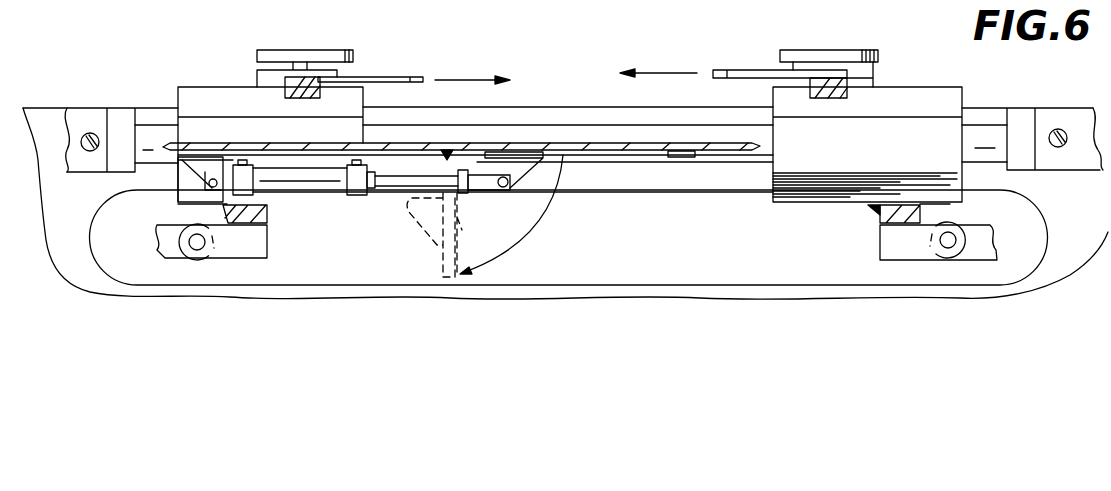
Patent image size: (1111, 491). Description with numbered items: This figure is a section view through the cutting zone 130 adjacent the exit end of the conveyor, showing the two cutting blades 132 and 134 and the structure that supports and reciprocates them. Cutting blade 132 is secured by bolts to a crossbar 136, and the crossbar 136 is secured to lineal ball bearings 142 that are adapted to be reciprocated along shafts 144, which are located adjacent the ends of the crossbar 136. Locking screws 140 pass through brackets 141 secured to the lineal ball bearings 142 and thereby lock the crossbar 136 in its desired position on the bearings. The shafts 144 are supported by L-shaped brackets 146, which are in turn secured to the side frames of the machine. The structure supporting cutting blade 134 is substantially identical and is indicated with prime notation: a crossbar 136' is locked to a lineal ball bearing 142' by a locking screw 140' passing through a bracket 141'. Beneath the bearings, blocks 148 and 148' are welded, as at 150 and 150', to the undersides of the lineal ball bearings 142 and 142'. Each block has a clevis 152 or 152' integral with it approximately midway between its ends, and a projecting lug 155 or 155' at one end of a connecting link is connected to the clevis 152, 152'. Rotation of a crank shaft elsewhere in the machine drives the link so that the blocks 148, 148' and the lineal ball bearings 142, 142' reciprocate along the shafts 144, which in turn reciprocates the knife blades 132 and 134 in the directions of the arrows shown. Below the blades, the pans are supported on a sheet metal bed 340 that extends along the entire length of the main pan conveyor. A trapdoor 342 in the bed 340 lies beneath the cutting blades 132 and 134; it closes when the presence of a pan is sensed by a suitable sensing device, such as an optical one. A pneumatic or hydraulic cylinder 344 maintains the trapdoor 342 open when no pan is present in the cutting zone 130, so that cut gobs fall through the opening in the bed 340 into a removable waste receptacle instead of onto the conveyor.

The cutting zone 130 is at (599, 60).
The cutting blade 132 is at (352, 72).
The cutting blade 134 is at (746, 69).
The crossbar 136 is at (277, 96).
The crossbar 136' is at (868, 97).
The locking screw 140 is at (332, 39).
The locking screw 140' is at (832, 31).
The bracket 141 is at (271, 57).
The bracket 141' is at (868, 55).
The lineal ball bearing 142 is at (256, 128).
The lineal ball bearing 142' is at (894, 134).
The shaft 144 is at (594, 128).
The L-shaped bracket 146 is at (87, 113).
The block 148 is at (274, 224).
The block 148' is at (861, 224).
The weld 150 is at (169, 194).
The weld 150' is at (967, 210).
The clevis 152 is at (243, 249).
The clevis 152' is at (906, 247).
The projecting lug 155 is at (110, 257).
The projecting lug 155' is at (1019, 231).
The sheet metal bed 340 is at (190, 143).
The trapdoor 342 is at (452, 205).
The pneumatic or hydraulic cylinder 344 is at (333, 187).